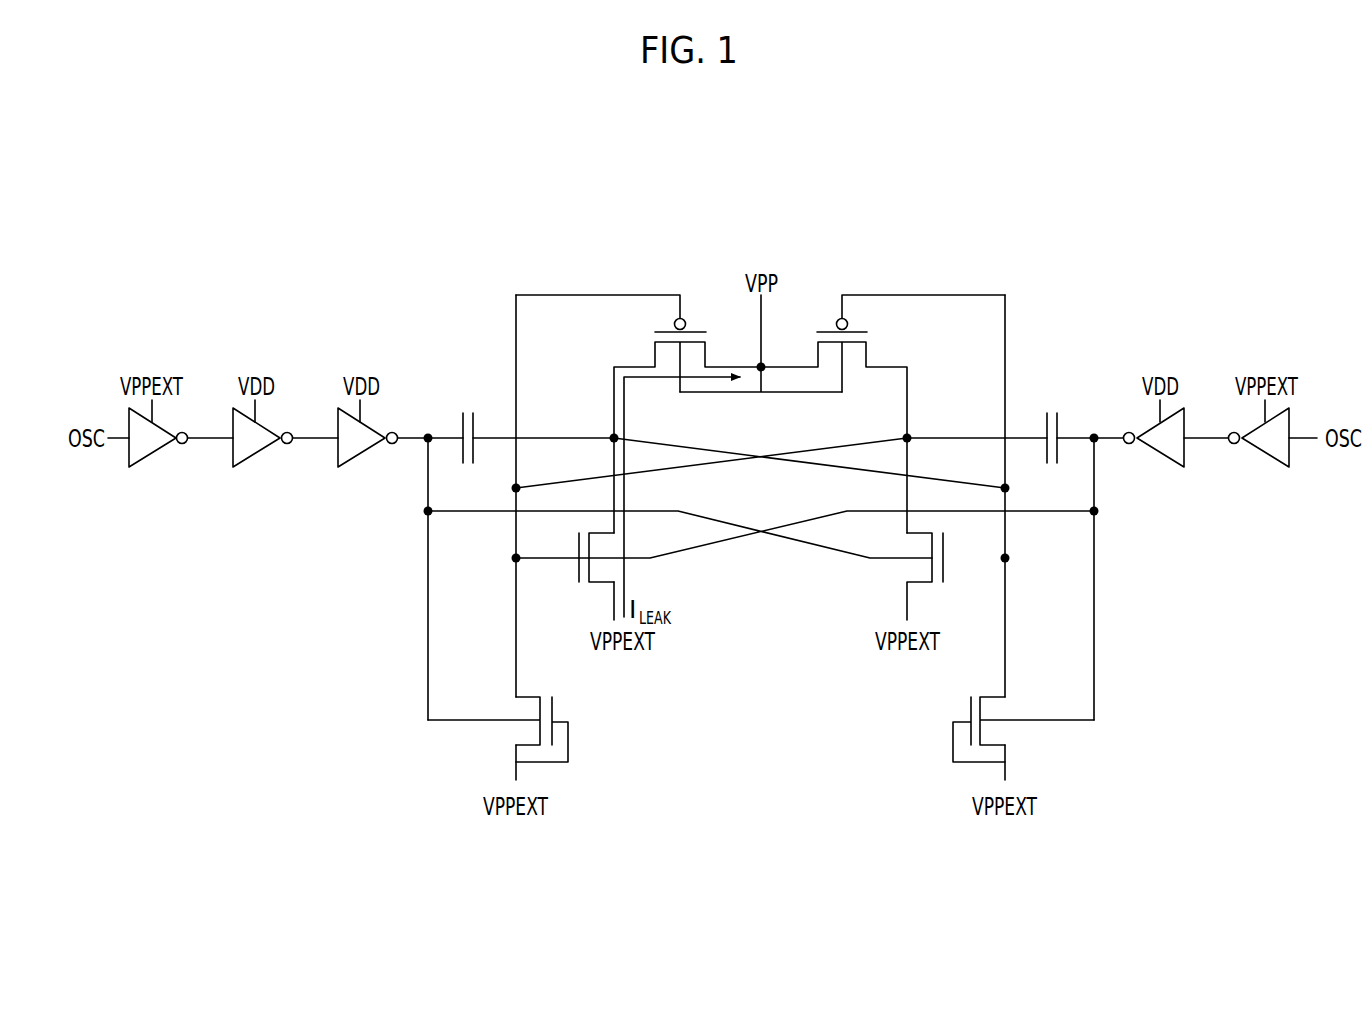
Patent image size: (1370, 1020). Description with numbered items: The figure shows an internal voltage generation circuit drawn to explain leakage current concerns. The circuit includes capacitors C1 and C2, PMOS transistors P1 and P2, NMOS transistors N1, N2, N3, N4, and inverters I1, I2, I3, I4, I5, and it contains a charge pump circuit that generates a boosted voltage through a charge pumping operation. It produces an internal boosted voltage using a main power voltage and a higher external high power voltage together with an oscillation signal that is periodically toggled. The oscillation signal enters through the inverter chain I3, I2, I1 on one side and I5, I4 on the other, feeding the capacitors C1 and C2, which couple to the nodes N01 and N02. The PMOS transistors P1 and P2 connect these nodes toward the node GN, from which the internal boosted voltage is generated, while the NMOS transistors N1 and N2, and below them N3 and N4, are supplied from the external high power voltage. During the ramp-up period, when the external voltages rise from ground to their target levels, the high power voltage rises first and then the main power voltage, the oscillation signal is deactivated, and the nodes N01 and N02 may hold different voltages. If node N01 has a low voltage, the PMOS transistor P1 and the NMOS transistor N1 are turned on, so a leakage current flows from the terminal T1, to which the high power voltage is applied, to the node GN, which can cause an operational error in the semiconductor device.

The inverter I1 is at (365, 455).
The inverter I2 is at (260, 455).
The inverter I3 is at (155, 455).
The inverter I4 is at (1157, 455).
The inverter I5 is at (1262, 455).
The capacitor C1 is at (467, 409).
The capacitor C2 is at (1051, 409).
The PMOS transistor P1 is at (648, 342).
The PMOS transistor P2 is at (857, 362).
The NMOS transistor N1 is at (580, 592).
The NMOS transistor N2 is at (903, 577).
The NMOS transistor N3 is at (508, 740).
The NMOS transistor N4 is at (1011, 740).
The terminal T1 is at (611, 621).
The node N01 is at (595, 427).
The node N02 is at (927, 427).
The node GN is at (767, 355).